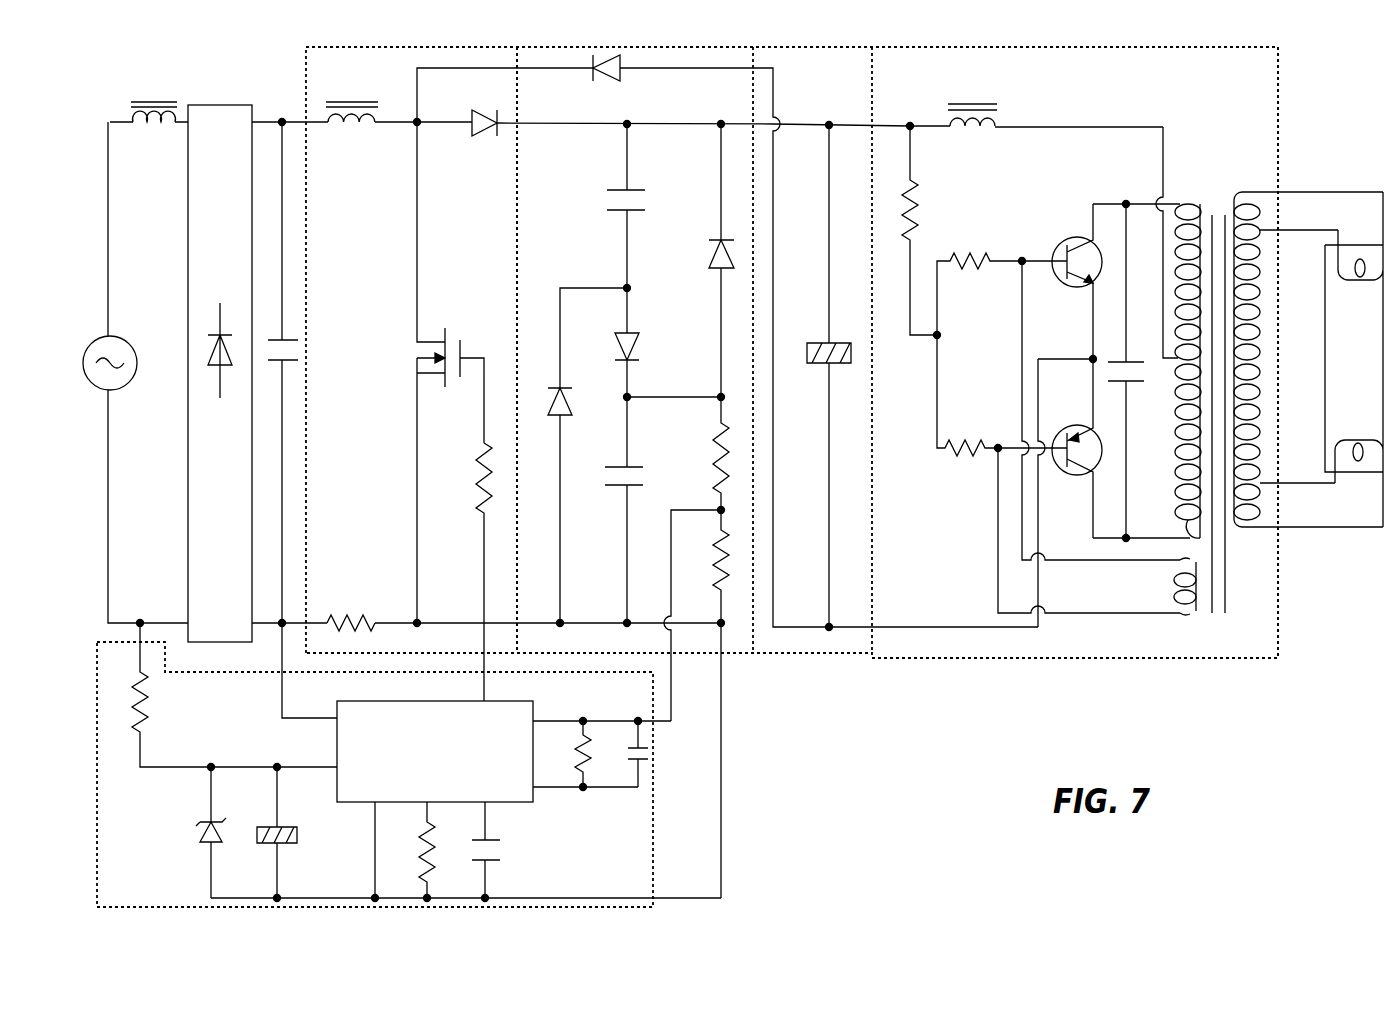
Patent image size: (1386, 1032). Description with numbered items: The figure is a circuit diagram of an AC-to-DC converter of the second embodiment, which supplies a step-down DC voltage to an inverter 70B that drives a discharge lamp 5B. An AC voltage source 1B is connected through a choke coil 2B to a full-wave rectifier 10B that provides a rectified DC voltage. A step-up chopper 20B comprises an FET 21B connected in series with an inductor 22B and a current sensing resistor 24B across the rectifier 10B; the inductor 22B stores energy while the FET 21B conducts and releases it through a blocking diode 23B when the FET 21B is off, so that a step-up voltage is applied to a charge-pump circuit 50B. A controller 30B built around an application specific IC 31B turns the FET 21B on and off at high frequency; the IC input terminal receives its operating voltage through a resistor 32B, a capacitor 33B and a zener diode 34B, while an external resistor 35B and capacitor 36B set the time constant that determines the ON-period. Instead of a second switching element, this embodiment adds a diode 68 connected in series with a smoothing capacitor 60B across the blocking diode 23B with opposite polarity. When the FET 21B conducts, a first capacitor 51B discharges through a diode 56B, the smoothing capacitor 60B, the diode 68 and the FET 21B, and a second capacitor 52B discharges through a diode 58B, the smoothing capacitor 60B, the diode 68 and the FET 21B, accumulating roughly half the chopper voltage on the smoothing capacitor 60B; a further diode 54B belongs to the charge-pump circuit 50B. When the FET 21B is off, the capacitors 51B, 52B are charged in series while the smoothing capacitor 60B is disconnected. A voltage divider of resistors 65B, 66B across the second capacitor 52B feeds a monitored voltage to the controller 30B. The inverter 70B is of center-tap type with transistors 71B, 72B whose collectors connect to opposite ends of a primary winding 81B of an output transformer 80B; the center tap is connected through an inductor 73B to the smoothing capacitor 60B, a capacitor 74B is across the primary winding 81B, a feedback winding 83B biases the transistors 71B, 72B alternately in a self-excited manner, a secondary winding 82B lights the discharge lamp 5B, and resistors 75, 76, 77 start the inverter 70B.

The AC voltage source 1B is at (93, 395).
The choke coil 2B is at (125, 108).
The full-wave rectifier 10B is at (190, 173).
The step-up chopper 20B is at (306, 47).
The FET 21B is at (405, 358).
The inductor 22B is at (348, 145).
The blocking diode 23B is at (472, 137).
The current sensing resistor 24B is at (347, 608).
The controller 30B is at (653, 793).
The application specific IC 31B is at (533, 803).
The resistor 32B is at (152, 697).
The capacitor 33B is at (300, 835).
The zener diode 34B is at (195, 838).
The resistor 35B is at (442, 848).
The capacitor 36B is at (505, 852).
The charge-pump circuit 50B is at (517, 222).
The first capacitor 51B is at (607, 202).
The second capacitor 52B is at (603, 475).
The diode 54B is at (638, 343).
The diode 56B is at (575, 420).
The diode 58B is at (705, 253).
The smoothing capacitor 60B is at (814, 334).
The resistor 65B is at (707, 458).
The resistor 66B is at (708, 567).
The diode 68 is at (623, 87).
The inverter 70B is at (1282, 82).
The transistor 71B is at (1063, 248).
The transistor 72B is at (1067, 478).
The inductor 73B is at (980, 147).
The capacitor 74B is at (1137, 392).
The resistor 75 is at (918, 192).
The resistor 76 is at (980, 273).
The resistor 77 is at (963, 462).
The output transformer 80B is at (1215, 200).
The primary winding 81B is at (1177, 198).
The secondary winding 82B is at (1245, 532).
The feedback winding 83B is at (1185, 617).
The discharge lamp 5B is at (1327, 317).